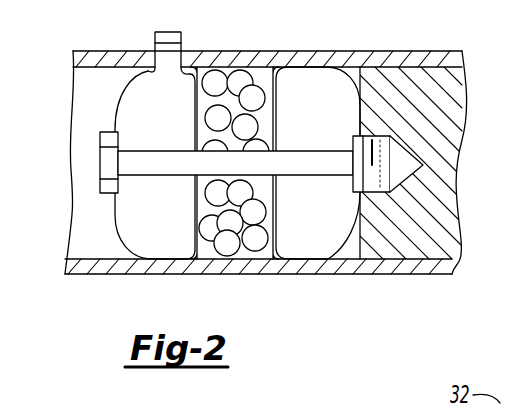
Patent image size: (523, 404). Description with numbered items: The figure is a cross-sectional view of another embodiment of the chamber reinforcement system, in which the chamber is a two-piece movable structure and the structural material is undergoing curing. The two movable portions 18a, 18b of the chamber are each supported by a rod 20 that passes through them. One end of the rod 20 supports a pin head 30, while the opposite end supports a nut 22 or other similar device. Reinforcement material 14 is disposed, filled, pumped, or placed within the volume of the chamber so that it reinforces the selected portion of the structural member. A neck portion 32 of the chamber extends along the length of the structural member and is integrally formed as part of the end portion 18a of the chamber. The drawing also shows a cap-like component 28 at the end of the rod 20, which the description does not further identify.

The reinforcement material 14 is at (251, 80).
The movable portion 18a is at (328, 220).
The movable portion 18b is at (142, 228).
The rod 20 is at (297, 178).
The nut 22 is at (402, 150).
The end cap 28 is at (107, 162).
The pin head 30 is at (148, 71).
The neck portion 32 is at (153, 36).